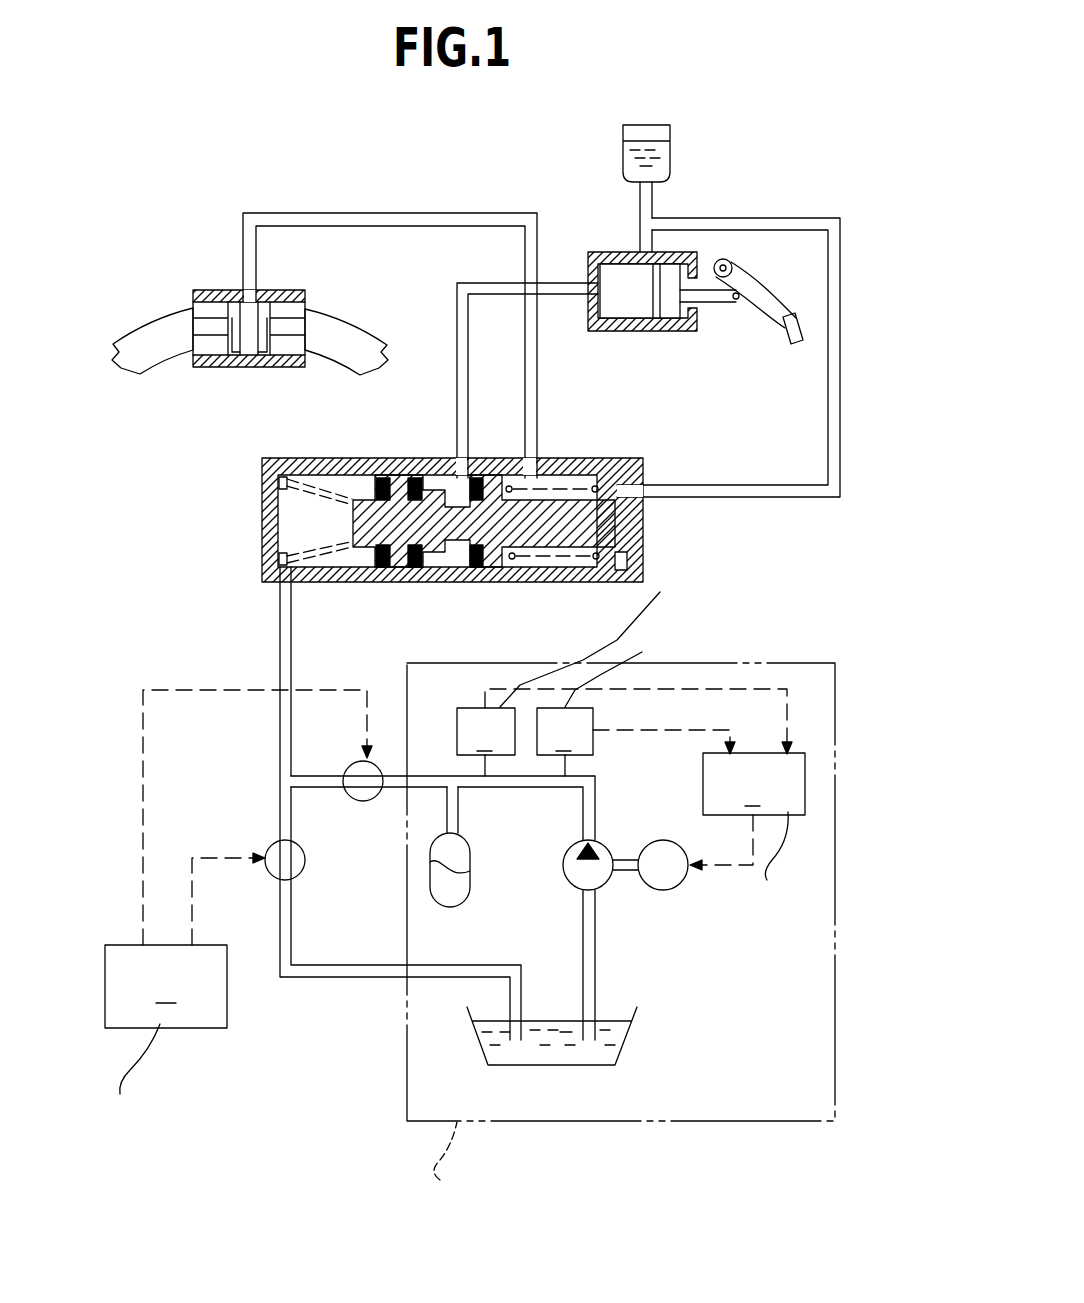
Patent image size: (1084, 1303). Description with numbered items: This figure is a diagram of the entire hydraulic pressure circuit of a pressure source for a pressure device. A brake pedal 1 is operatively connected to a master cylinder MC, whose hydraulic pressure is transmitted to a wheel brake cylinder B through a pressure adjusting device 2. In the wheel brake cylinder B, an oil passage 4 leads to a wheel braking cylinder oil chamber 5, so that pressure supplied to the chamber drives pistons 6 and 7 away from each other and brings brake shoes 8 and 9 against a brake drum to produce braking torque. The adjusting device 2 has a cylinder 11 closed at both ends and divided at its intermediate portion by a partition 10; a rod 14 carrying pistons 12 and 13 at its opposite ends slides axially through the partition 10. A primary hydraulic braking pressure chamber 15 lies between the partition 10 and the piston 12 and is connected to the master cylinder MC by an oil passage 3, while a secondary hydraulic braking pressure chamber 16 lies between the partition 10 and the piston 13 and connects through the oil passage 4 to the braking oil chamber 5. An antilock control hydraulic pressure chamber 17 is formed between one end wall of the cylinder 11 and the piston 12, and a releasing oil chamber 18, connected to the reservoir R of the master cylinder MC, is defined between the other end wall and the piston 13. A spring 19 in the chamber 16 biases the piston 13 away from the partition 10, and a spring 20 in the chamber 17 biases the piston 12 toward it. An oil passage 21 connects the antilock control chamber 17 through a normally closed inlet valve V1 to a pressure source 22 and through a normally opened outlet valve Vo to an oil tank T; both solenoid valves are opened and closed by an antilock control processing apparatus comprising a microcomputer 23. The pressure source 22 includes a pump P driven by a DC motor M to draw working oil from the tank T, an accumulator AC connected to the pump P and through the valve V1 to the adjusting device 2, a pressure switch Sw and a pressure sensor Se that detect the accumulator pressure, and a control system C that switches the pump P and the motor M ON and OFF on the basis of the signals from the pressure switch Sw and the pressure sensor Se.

The brake pedal 1 is at (790, 343).
The pressure adjusting device 2 is at (418, 524).
The oil passage 3 is at (455, 317).
The oil passage 4 is at (377, 213).
The wheel braking cylinder oil chamber 5 is at (248, 367).
The piston 6 is at (233, 366).
The piston 7 is at (267, 366).
The brake shoe 8 is at (162, 330).
The brake shoe 9 is at (338, 332).
The partition 10 is at (480, 567).
The cylinder 11 is at (342, 463).
The piston 12 is at (398, 560).
The piston 13 is at (598, 560).
The rod 14 is at (537, 527).
The primary hydraulic braking pressure chamber 15 is at (448, 490).
The secondary hydraulic braking pressure chamber 16 is at (557, 480).
The antilock control hydraulic pressure chamber 17 is at (292, 497).
The releasing oil chamber 18 is at (627, 460).
The spring 19 is at (593, 478).
The spring 20 is at (283, 563).
The oil passage 21 is at (279, 648).
The pressure source 22 is at (400, 1083).
The microcomputer 23 is at (232, 909).
The wheel brake cylinder B is at (208, 286).
The master cylinder MC is at (610, 252).
The reservoir R is at (673, 157).
The pressure sensor Se is at (691, 675).
The pressure switch Sw is at (713, 705).
The control system C is at (757, 851).
The pump P is at (561, 873).
The DC motor M is at (667, 890).
The accumulator AC is at (473, 880).
The oil tank T is at (628, 1042).
The inlet valve V1 is at (362, 801).
The outlet valve Vo is at (303, 870).